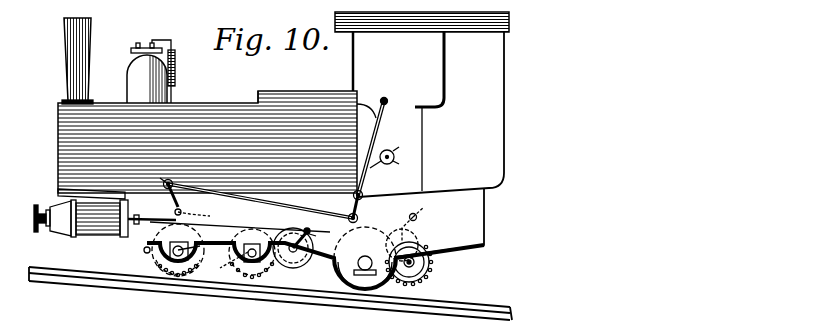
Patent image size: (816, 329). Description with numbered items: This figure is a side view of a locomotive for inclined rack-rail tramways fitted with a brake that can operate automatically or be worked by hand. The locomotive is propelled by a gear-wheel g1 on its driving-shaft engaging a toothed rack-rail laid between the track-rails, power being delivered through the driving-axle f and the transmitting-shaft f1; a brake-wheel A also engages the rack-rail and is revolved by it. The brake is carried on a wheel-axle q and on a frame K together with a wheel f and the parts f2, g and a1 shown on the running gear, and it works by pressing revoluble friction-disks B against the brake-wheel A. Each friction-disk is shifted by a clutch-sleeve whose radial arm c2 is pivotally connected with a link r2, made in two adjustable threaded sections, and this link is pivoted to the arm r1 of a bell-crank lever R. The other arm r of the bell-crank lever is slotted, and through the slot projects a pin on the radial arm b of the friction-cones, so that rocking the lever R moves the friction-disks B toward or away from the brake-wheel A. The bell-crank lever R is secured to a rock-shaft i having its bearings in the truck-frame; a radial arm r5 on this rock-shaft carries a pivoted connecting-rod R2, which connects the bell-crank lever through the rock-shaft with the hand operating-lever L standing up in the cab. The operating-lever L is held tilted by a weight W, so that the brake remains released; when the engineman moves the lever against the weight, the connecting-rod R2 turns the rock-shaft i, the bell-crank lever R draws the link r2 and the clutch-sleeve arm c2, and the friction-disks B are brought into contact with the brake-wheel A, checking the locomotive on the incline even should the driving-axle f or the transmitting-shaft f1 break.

The arm of the bell-crank lever r1 is at (129, 188).
The bell-crank lever R is at (160, 178).
The operating-lever L is at (373, 149).
The weight W is at (390, 161).
The connecting-rod R2 is at (268, 187).
The slotted arm of the bell-crank lever r is at (181, 210).
The radial arm of the rock-shaft r5 is at (195, 206).
The radial arm of the friction-cones b is at (196, 221).
The gear-wheel on the driving-shaft g1 is at (193, 241).
The transmitting-shaft f1 is at (252, 254).
The link r2 is at (143, 237).
The radial arm of the clutch-sleeve c2 is at (145, 252).
The friction-disk B is at (158, 268).
The brake-wheel A is at (185, 275).
The gear wheel f2 is at (264, 284).
The driving-axle f is at (295, 268).
The crank handle g is at (315, 241).
The wheel-axle q is at (365, 257).
The gear wheel a1 is at (416, 254).
The rock-shaft i is at (414, 220).
The frame K is at (447, 222).